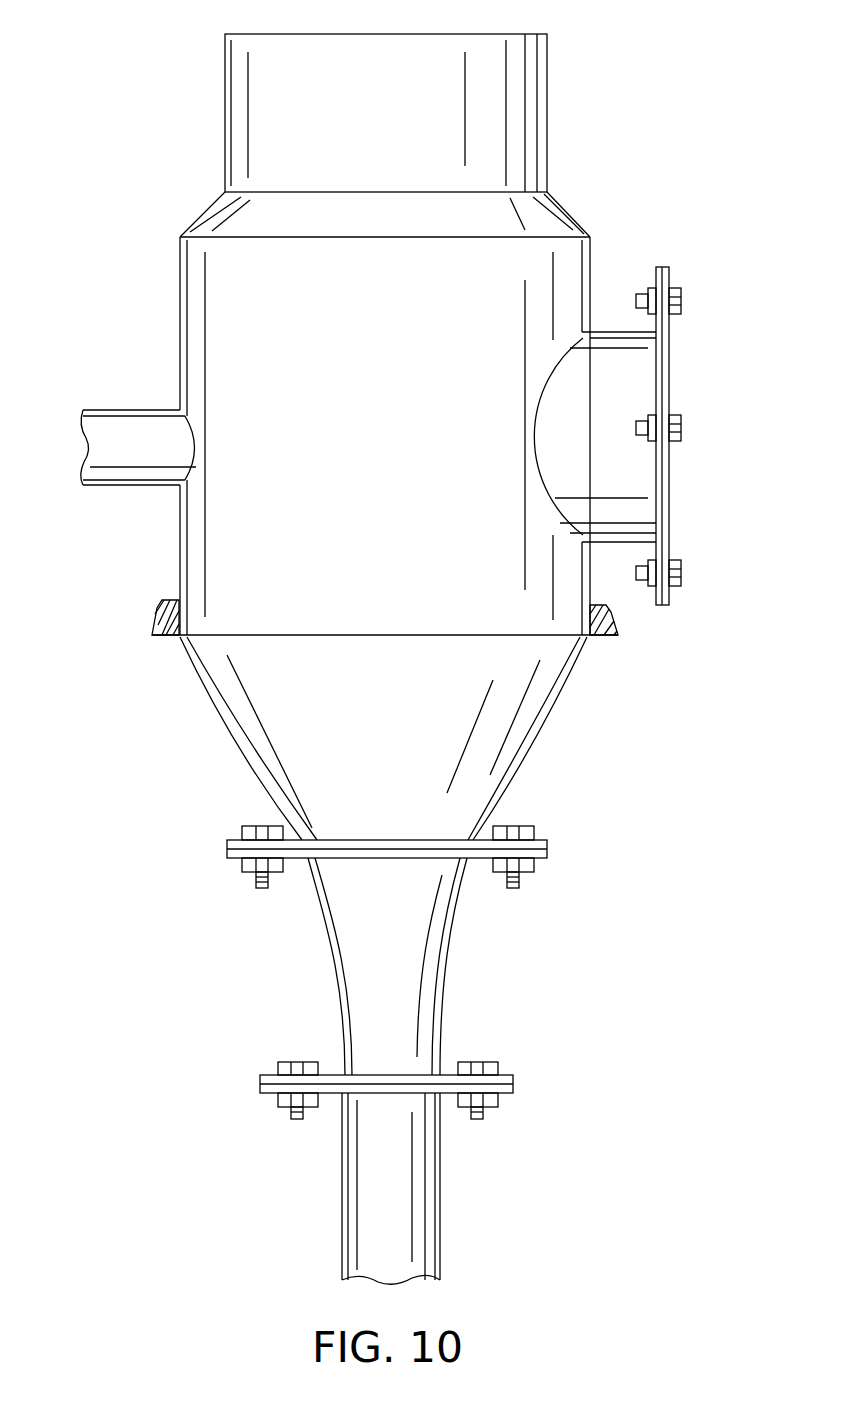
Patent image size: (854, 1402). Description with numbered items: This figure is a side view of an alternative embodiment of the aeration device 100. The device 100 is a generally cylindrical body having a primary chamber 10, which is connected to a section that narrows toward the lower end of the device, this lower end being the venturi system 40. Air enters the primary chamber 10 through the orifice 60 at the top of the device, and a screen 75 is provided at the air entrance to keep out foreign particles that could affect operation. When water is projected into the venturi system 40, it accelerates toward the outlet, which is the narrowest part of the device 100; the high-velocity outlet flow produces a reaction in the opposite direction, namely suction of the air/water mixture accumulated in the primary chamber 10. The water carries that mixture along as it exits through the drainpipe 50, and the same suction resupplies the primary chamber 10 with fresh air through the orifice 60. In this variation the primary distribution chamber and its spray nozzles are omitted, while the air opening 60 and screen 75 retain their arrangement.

The aeration device 100 is at (643, 174).
The orifice 60 is at (265, 33).
The primary chamber 10 is at (392, 442).
The screen 75 is at (670, 476).
The venturi system 40 is at (442, 966).
The drainpipe 50 is at (405, 1190).